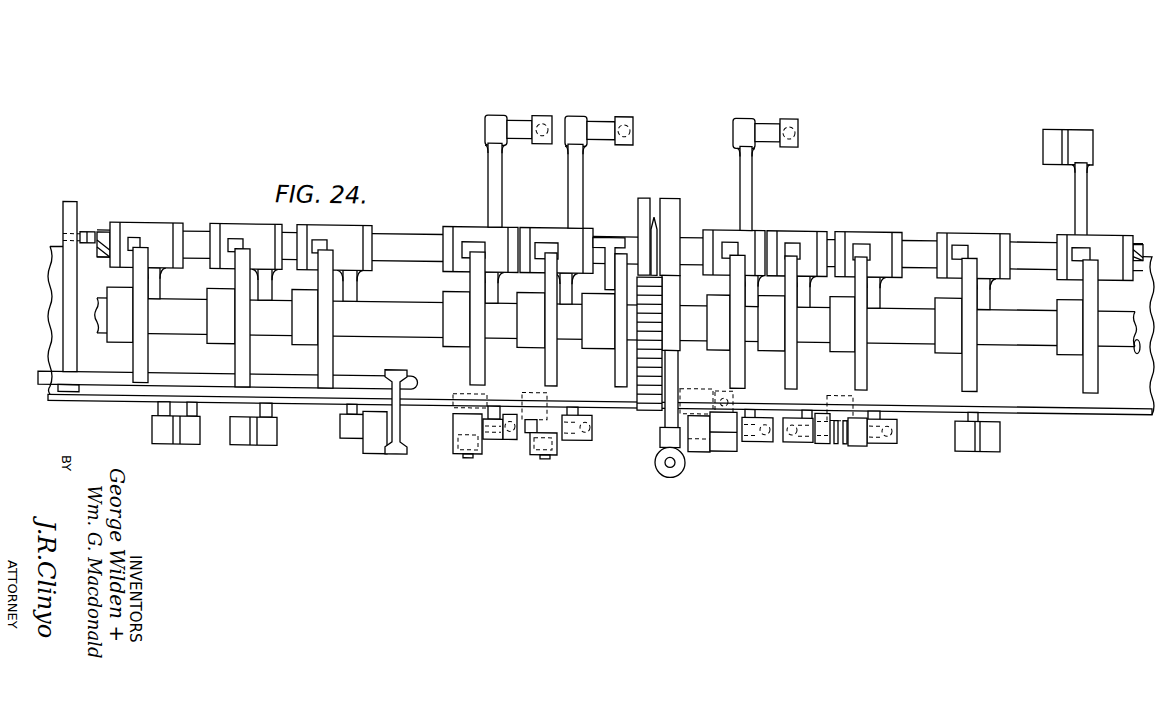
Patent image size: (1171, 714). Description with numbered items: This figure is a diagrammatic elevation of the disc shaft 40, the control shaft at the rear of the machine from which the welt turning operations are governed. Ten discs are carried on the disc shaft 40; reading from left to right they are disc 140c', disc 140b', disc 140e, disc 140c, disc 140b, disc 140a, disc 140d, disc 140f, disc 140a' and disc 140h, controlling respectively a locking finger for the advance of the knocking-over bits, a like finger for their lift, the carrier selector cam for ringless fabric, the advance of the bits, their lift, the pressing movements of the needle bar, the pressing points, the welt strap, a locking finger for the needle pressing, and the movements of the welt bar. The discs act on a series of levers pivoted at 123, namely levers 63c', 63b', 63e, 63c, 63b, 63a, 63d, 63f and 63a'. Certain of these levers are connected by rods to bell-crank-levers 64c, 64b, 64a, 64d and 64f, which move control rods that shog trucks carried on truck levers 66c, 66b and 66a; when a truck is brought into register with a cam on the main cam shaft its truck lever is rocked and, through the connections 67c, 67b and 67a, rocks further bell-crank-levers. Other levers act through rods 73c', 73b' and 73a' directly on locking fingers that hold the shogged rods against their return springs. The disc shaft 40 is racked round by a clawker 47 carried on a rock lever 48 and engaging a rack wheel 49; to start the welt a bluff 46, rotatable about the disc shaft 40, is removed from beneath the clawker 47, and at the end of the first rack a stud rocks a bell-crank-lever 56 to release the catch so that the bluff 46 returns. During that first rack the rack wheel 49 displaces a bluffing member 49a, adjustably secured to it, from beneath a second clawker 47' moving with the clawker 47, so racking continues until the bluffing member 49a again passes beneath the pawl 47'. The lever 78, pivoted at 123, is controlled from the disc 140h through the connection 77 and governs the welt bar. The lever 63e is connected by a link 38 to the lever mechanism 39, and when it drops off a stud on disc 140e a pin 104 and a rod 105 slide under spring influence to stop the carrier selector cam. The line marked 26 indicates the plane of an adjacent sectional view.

The pin 104 is at (63, 236).
The rod 105 is at (86, 232).
The pivot 123 is at (101, 234).
The lever 63c' is at (150, 319).
The rod 73c' is at (176, 451).
The lever 63b' is at (272, 347).
The rod 73b' is at (261, 453).
The lever 63e is at (351, 272).
The link 38 is at (375, 434).
The lever mechanism 39 is at (397, 425).
The lever 63c is at (481, 358).
The lever 63b is at (568, 360).
The lever 63a is at (748, 348).
The lever 63d is at (787, 247).
The lever 63f is at (857, 247).
The lever 63a' is at (995, 349).
The rod 73a' is at (981, 457).
The truck lever 66c is at (488, 185).
The connection 67c is at (541, 120).
The truck lever 66b is at (568, 184).
The connection 67b is at (625, 120).
The truck lever 66a is at (752, 184).
The connection 67a is at (796, 118).
The connection 77 is at (1050, 127).
The lever 78 is at (1087, 183).
The second clawker 47' is at (622, 218).
The clawker 47 is at (654, 219).
The rock lever 48 is at (673, 205).
The bluff 46 is at (681, 238).
The rack wheel 49 is at (657, 400).
The bluffing member 49a is at (634, 275).
The bell-crank-lever 56 is at (670, 441).
The disc 140c' is at (94, 340).
The disc 140b' is at (225, 368).
The disc 140e is at (325, 362).
The disc 140c is at (451, 318).
The disc 140b is at (528, 319).
The disc 140a is at (712, 324).
The disc 140d is at (790, 368).
The disc 140f is at (862, 362).
The disc 140a' is at (937, 332).
The disc 140h is at (1092, 382).
The bell-crank-lever 64c is at (467, 421).
The bell-crank-lever 64b is at (547, 432).
The bell-crank-lever 64a is at (725, 423).
The bell-crank-lever 64d is at (827, 441).
The bell-crank-lever 64f is at (857, 441).
The disc shaft 40 is at (98, 316).
The section line 26 is at (770, 112).